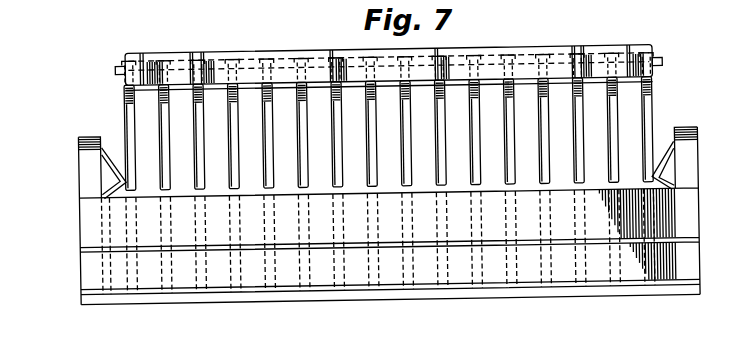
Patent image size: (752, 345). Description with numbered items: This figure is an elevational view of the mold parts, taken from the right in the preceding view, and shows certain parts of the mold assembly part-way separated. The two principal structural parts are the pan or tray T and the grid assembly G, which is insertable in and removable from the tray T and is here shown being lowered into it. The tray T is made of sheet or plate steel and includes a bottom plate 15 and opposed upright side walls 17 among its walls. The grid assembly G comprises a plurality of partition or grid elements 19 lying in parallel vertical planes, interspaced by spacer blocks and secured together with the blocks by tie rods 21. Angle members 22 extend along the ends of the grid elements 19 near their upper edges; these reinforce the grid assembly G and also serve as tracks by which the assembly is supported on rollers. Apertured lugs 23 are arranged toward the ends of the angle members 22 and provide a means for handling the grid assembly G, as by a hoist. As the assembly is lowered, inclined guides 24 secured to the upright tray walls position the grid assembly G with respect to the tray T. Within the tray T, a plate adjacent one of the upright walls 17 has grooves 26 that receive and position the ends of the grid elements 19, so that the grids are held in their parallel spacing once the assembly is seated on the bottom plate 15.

The angle member 22 is at (525, 51).
The apertured lug 23 is at (200, 50).
The grid assembly G is at (580, 46).
The tie rod 21 is at (665, 66).
The grid element 19 is at (168, 96).
The inclined guide 24 is at (115, 146).
The tray T is at (78, 274).
The groove 26 is at (246, 310).
The bottom plate 15 is at (333, 294).
The upright side wall 17 is at (458, 276).